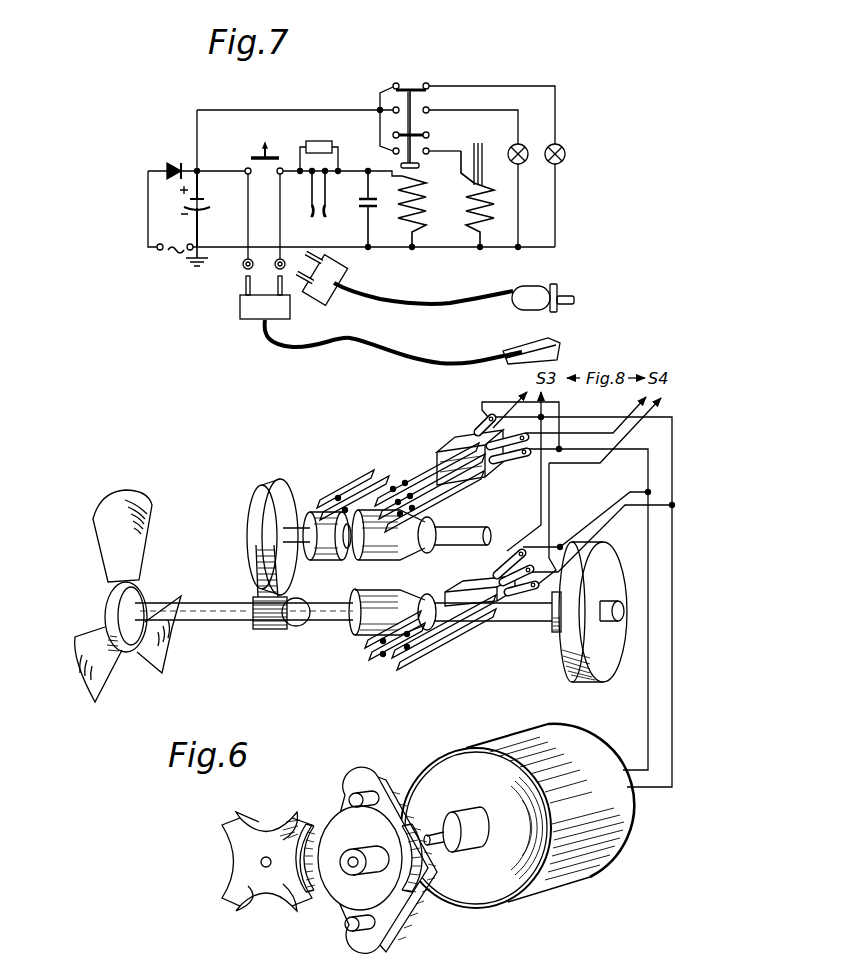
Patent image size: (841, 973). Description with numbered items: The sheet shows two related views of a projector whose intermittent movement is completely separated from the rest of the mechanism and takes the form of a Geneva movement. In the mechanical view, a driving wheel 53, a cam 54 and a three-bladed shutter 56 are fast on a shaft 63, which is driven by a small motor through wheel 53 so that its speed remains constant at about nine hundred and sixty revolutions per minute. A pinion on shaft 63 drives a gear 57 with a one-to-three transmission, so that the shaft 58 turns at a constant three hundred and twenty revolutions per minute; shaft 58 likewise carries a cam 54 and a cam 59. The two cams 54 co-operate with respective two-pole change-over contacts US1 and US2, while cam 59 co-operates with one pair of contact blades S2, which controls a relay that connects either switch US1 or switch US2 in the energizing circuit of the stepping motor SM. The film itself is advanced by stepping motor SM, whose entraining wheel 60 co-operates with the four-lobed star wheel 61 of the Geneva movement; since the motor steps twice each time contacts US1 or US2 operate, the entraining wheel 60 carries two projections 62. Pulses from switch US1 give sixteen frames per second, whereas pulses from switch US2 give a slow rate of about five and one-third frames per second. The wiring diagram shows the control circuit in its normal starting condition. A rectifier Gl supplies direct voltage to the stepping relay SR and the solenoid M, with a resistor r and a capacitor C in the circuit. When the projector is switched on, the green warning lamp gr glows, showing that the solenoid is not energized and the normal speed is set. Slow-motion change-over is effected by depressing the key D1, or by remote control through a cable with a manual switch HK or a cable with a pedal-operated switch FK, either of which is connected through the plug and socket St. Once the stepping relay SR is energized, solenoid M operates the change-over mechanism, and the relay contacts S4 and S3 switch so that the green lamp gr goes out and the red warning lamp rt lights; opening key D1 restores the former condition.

In FIG. 7, the rectifier Gl is at (169, 160).
In FIG. 7, the key D1 is at (258, 149).
In FIG. 7, the plug and socket St is at (264, 221).
In FIG. 7, the resistor r is at (319, 147).
In FIG. 7, the contact blades S2 is at (316, 204).
In FIG. 6, the contact blades S2 is at (395, 487).
In FIG. 7, the capacitor C is at (363, 209).
In FIG. 7, the stepping relay SR is at (412, 224).
In FIG. 7, the solenoid M is at (477, 207).
In FIG. 7, the relay contacts S4 is at (467, 115).
In FIG. 6, the relay contacts S4 is at (593, 423).
In FIG. 7, the switch S3 is at (427, 140).
In FIG. 6, the switch S3 is at (518, 467).
In FIG. 7, the red warning lamp rt is at (523, 197).
In FIG. 7, the green warning lamp gr is at (562, 195).
In FIG. 7, the manual switch HK is at (470, 297).
In FIG. 7, the pedal-operated switch FK is at (427, 342).
In FIG. 6, the three-bladed shutter 56 is at (138, 530).
In FIG. 6, the gear 57 is at (262, 505).
In FIG. 6, the shaft 58 is at (490, 531).
In FIG. 6, the cam 59 is at (327, 550).
In FIG. 6, the shaft 63 is at (221, 614).
In FIG. 6, the cam 54 is at (415, 560).
In FIG. 6, the driving wheel 53 is at (565, 652).
In FIG. 6, the two-pole change-over contacts US2 is at (475, 436).
In FIG. 6, the two-pole change-over contacts US1 is at (409, 656).
In FIG. 6, the stepping motor SM is at (430, 775).
In FIG. 6, the entraining wheel 60 is at (382, 915).
In FIG. 6, the star wheel 61 is at (270, 888).
In FIG. 6, the projections 62 is at (350, 928).